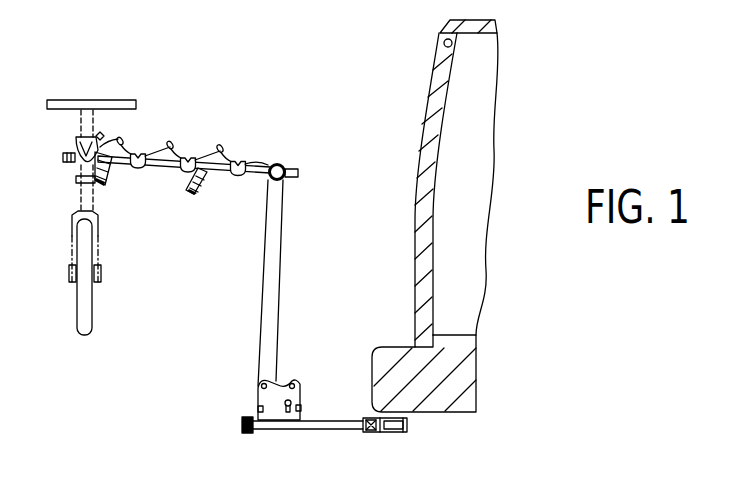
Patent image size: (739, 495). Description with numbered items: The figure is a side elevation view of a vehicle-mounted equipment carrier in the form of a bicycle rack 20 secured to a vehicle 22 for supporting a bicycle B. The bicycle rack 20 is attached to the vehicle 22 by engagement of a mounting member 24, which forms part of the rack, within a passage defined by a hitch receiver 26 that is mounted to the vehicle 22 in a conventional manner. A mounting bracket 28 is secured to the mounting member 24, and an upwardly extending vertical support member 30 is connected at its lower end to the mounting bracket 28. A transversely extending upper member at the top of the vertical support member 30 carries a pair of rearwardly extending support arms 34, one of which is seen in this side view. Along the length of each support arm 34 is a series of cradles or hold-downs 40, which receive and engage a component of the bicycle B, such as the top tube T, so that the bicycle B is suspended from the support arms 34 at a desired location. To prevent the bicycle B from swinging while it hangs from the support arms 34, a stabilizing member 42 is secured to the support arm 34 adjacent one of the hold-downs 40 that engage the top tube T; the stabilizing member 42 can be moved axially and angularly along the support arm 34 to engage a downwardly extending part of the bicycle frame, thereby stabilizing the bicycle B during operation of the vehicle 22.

The bicycle rack 20 is at (245, 265).
The vehicle 22 is at (400, 100).
The mounting member 24 is at (277, 440).
The hitch receiver 26 is at (390, 443).
The mounting bracket 28 is at (294, 375).
The vertical support member 30 is at (290, 296).
The support arm 34 is at (223, 185).
The hold-down 40 is at (60, 130).
The stabilizing member 42 is at (181, 198).
The top tube T is at (72, 146).
The bicycle B is at (76, 217).